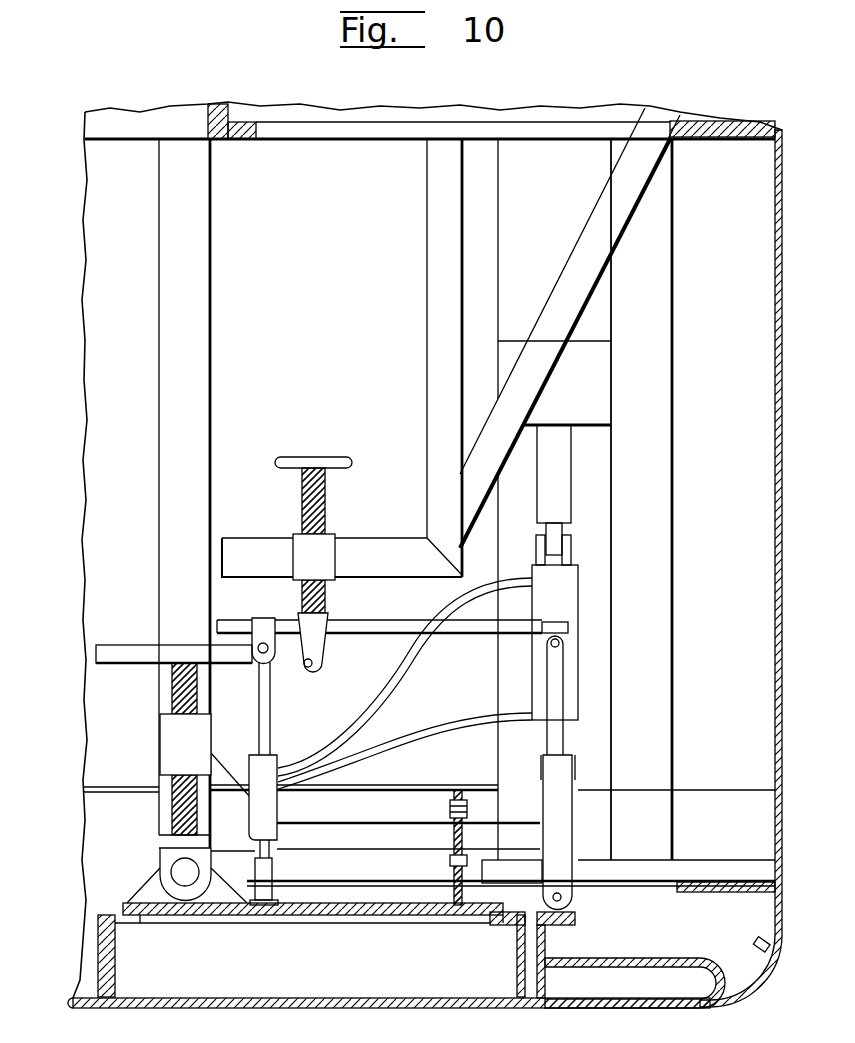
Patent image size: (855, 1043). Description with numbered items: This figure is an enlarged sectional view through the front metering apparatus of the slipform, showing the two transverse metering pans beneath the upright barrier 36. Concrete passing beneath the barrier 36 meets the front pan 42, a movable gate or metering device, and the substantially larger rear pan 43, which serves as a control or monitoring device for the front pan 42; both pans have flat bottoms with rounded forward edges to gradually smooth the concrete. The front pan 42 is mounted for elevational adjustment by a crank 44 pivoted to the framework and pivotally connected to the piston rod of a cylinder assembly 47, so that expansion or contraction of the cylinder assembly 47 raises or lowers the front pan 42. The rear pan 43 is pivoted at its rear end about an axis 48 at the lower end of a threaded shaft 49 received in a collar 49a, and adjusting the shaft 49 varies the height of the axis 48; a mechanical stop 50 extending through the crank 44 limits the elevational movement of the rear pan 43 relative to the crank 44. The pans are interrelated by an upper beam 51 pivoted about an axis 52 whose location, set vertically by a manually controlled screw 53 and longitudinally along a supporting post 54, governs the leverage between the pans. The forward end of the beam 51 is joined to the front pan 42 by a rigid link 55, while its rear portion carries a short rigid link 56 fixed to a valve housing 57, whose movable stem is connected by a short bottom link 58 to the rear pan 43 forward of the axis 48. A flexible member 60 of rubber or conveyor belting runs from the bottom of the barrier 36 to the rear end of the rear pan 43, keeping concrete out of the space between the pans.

The upright barrier 36 is at (773, 713).
The front pan 42 is at (653, 995).
The rear pan 43 is at (340, 1000).
The crank 44 is at (410, 849).
The cylinder assembly 47 is at (572, 653).
The pivotal axis 48 is at (181, 872).
The threaded shaft 49 is at (172, 685).
The collar 49a is at (172, 742).
The mechanical stop 50 is at (452, 876).
The upper beam 51 is at (372, 628).
The pivotal axis 52 is at (313, 665).
The manually controlled screw 53 is at (303, 503).
The supporting post 54 is at (410, 568).
The rigid link 55 is at (558, 739).
The short rigid link 56 is at (268, 716).
The valve housing 57 is at (270, 809).
The bottom link 58 is at (273, 868).
The flexible member 60 is at (455, 1002).